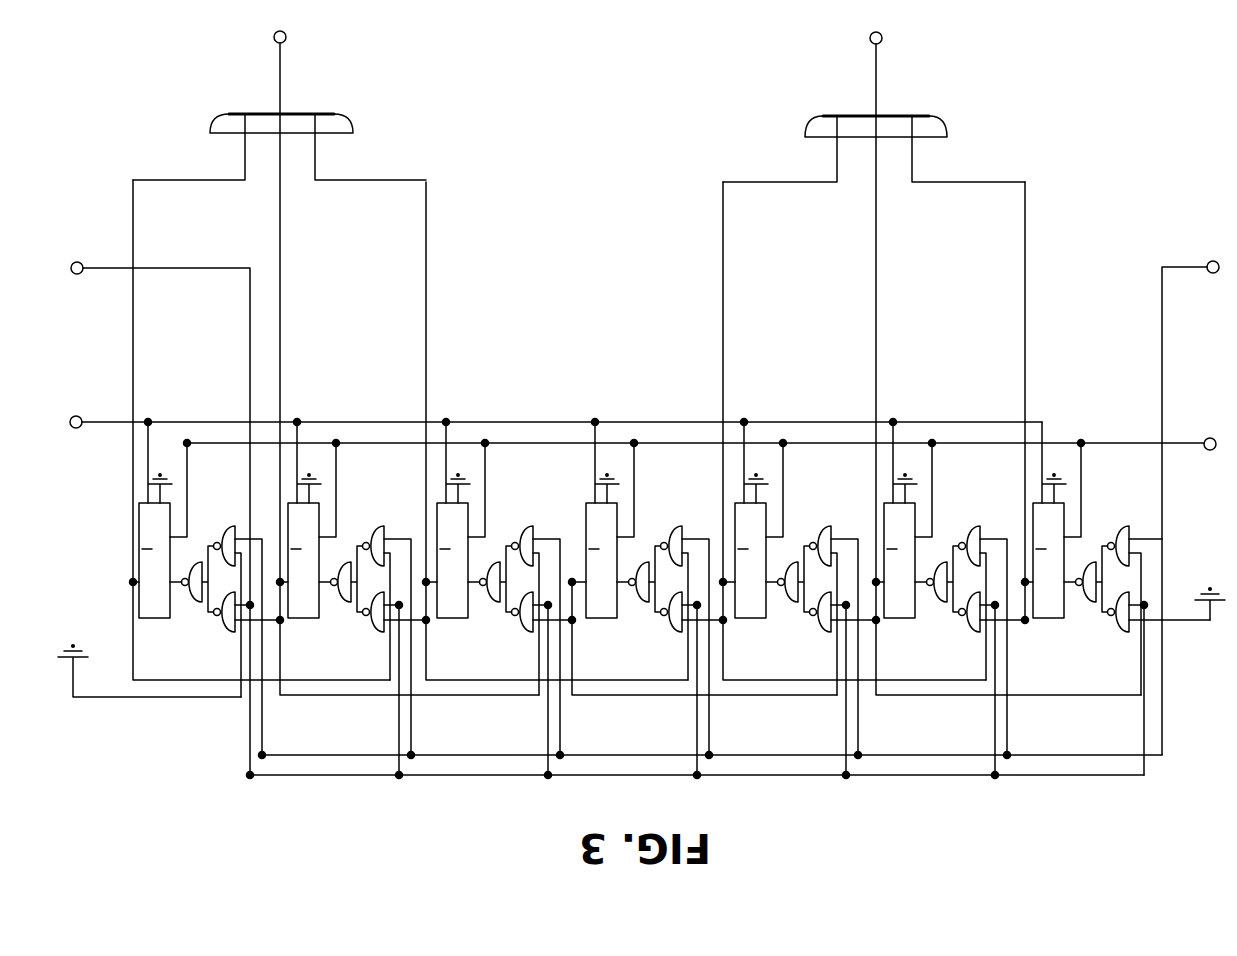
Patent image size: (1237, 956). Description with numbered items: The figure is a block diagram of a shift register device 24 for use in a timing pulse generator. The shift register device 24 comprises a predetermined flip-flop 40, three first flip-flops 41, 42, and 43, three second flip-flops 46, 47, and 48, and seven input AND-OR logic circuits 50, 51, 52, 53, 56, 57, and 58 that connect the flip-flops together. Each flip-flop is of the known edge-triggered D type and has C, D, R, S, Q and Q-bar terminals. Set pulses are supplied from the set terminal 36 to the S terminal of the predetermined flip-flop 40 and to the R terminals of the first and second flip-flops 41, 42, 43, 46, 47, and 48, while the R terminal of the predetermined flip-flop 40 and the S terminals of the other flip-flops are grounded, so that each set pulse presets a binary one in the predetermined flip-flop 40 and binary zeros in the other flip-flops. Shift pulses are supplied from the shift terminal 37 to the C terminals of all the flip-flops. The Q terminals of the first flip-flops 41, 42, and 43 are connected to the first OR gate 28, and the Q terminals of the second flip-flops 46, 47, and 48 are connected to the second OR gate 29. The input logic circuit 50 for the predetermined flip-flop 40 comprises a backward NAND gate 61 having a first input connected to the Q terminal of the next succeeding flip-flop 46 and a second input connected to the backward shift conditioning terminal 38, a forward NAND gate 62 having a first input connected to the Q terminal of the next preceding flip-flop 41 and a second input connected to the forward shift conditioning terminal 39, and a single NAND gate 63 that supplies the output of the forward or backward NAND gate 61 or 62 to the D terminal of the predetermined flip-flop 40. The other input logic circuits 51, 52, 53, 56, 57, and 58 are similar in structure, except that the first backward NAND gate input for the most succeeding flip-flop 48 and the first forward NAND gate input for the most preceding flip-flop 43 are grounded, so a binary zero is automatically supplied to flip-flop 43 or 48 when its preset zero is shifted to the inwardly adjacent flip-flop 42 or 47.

The shift register device 24 is at (394, 785).
The first OR gate 28 is at (829, 113).
The second OR gate 29 is at (219, 134).
The set terminal 36 is at (78, 428).
The shift terminal 37 is at (1212, 450).
The backward shift conditioning terminal 38 is at (1214, 274).
The forward shift conditioning terminal 39 is at (78, 274).
The predetermined flip-flop 40 is at (612, 534).
The first flip-flop 41 is at (761, 534).
The first flip-flop 42 is at (910, 534).
The first flip-flop 43 is at (1059, 535).
The second flip-flop 46 is at (463, 534).
The second flip-flop 47 is at (314, 534).
The second flip-flop 48 is at (158, 618).
The input logic circuit 50 is at (672, 452).
The input logic circuit 51 is at (810, 538).
The input logic circuit 52 is at (959, 538).
The input logic circuit 53 is at (1108, 538).
The input logic circuit 56 is at (512, 538).
The input logic circuit 57 is at (363, 538).
The input logic circuit 58 is at (225, 532).
The backward NAND gate 61 is at (681, 531).
The forward NAND gate 62 is at (665, 626).
The single NAND gate 63 is at (644, 564).